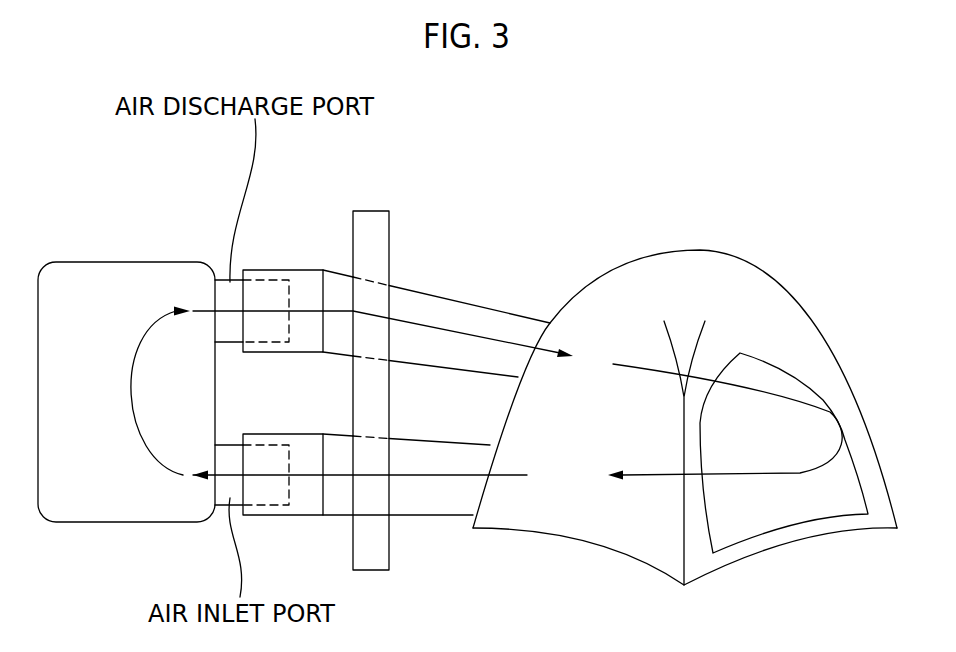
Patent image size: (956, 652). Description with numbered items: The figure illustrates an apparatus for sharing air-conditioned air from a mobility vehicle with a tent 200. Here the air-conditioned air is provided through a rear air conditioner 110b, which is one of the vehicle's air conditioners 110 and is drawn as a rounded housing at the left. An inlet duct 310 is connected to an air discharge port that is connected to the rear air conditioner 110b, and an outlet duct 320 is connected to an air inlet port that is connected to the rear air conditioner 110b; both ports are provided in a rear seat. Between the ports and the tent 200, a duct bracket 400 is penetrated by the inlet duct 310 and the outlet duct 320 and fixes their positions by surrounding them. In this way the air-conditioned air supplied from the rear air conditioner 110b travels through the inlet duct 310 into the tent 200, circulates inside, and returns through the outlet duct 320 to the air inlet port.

The air conditioner 110 is at (126, 344).
The rear air conditioner 110b is at (118, 262).
The tent 200 is at (730, 243).
The inlet duct 310 is at (455, 300).
The outlet duct 320 is at (430, 516).
The duct bracket 400 is at (372, 218).